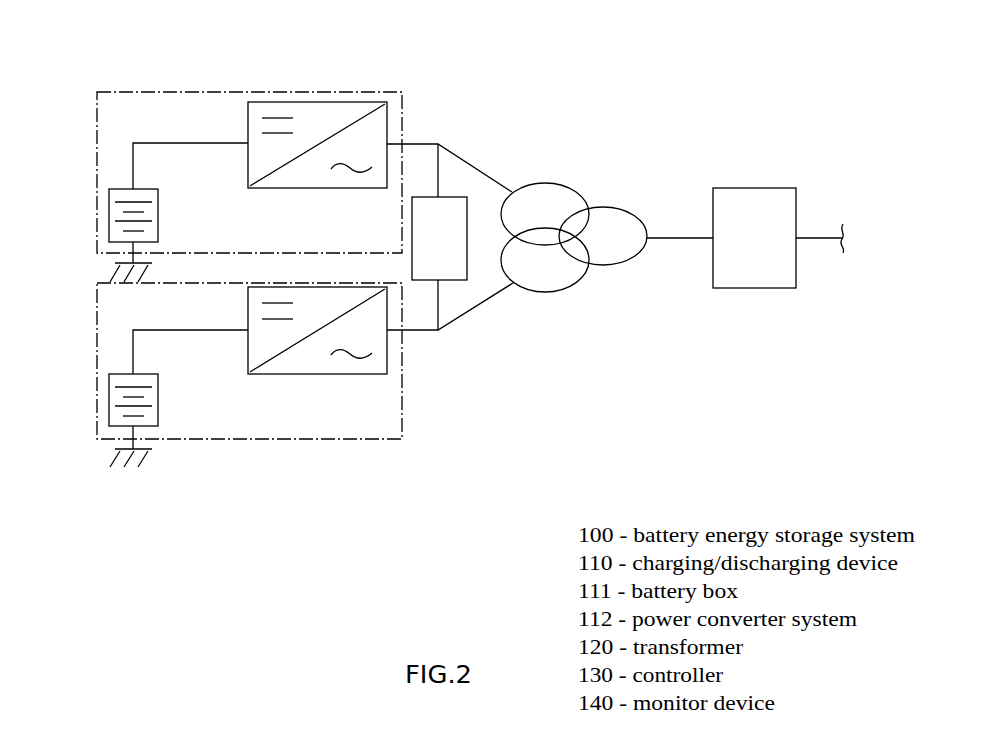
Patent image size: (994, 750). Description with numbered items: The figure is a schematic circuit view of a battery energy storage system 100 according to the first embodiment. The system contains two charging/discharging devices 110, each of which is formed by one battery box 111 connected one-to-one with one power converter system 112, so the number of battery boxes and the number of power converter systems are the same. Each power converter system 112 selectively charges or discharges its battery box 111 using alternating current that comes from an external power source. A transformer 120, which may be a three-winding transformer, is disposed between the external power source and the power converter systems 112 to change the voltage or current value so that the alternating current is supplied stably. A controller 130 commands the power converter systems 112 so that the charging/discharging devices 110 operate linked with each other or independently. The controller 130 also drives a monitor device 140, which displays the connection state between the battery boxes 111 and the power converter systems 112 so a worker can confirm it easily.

The battery energy storage system 100 is at (601, 84).
The charging/discharging device 110 is at (401, 107).
The battery box 111 is at (109, 213).
The power converter system 112 is at (317, 102).
The transformer 120 is at (600, 268).
The controller 130 is at (457, 281).
The monitor device 140 is at (770, 188).